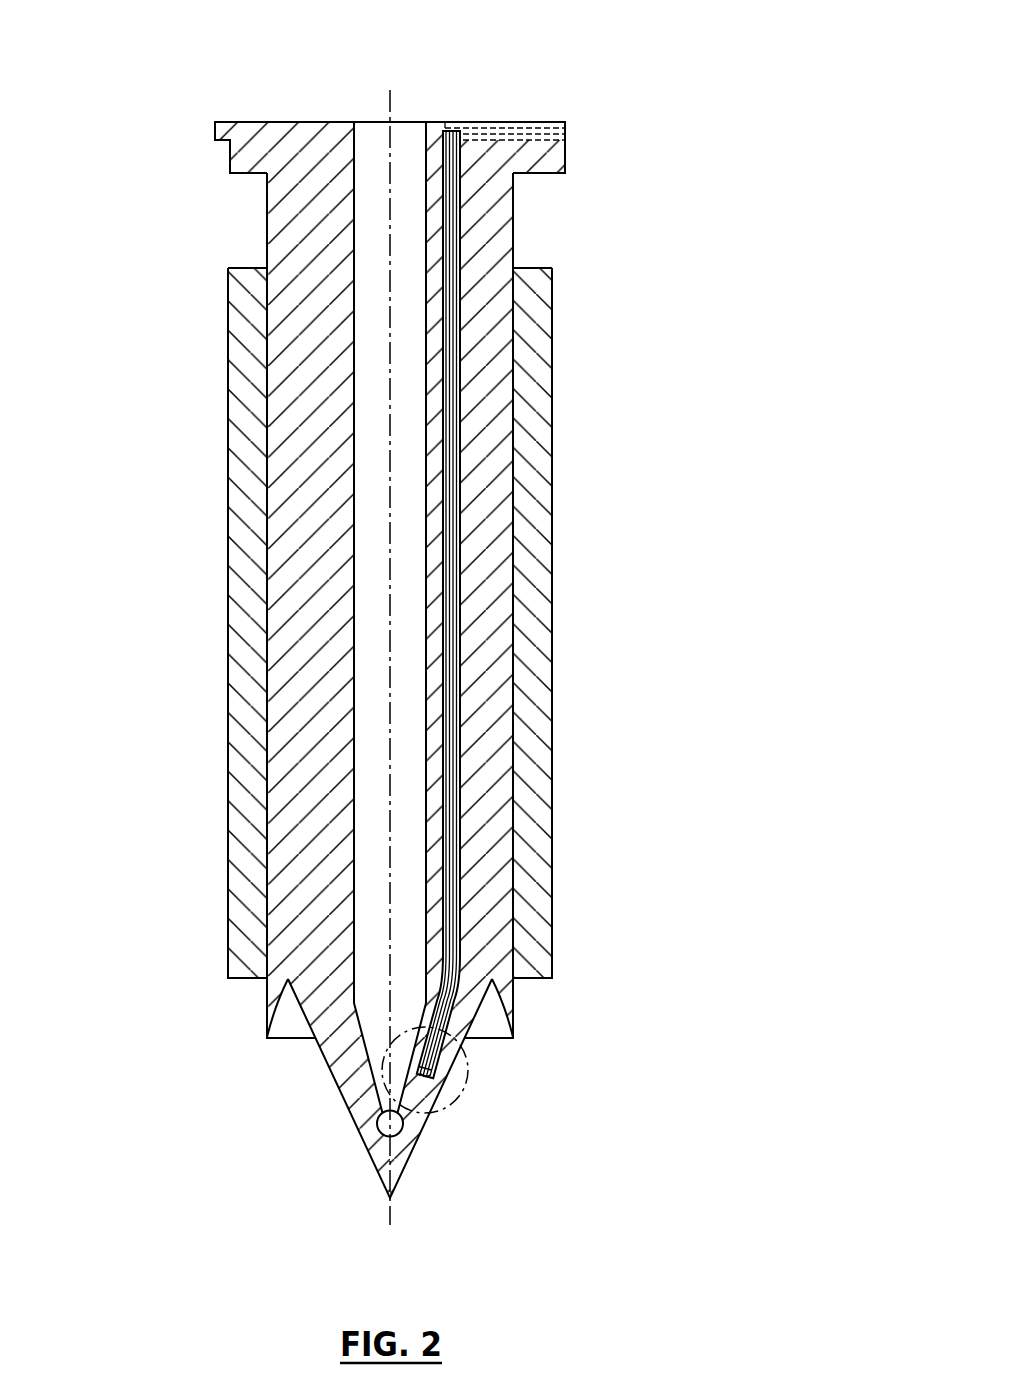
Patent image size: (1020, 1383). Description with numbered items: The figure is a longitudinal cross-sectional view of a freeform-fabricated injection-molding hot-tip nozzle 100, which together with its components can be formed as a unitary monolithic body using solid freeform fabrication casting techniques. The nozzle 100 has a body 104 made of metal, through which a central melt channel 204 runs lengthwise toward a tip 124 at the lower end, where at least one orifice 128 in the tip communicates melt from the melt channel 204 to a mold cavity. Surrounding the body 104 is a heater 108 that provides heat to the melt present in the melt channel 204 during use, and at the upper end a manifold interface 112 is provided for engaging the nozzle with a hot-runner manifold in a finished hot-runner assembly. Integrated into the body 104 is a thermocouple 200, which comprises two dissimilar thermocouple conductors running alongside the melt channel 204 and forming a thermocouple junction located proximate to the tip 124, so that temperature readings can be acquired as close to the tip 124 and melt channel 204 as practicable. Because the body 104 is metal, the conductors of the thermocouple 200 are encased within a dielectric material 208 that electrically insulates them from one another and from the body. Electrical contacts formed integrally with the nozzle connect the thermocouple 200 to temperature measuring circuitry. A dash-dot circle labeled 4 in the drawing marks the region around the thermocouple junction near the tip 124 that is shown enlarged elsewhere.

The hot-tip nozzle 100 is at (704, 113).
The body 104 is at (256, 216).
The heater 108 is at (228, 397).
The manifold interface 112 is at (253, 108).
The tip 124 is at (370, 1212).
The orifice 128 is at (383, 1131).
The thermocouple 200 is at (552, 679).
The melt channel 204 is at (372, 575).
The dielectric material 208 is at (453, 685).
The detail view circle 4 is at (468, 1080).